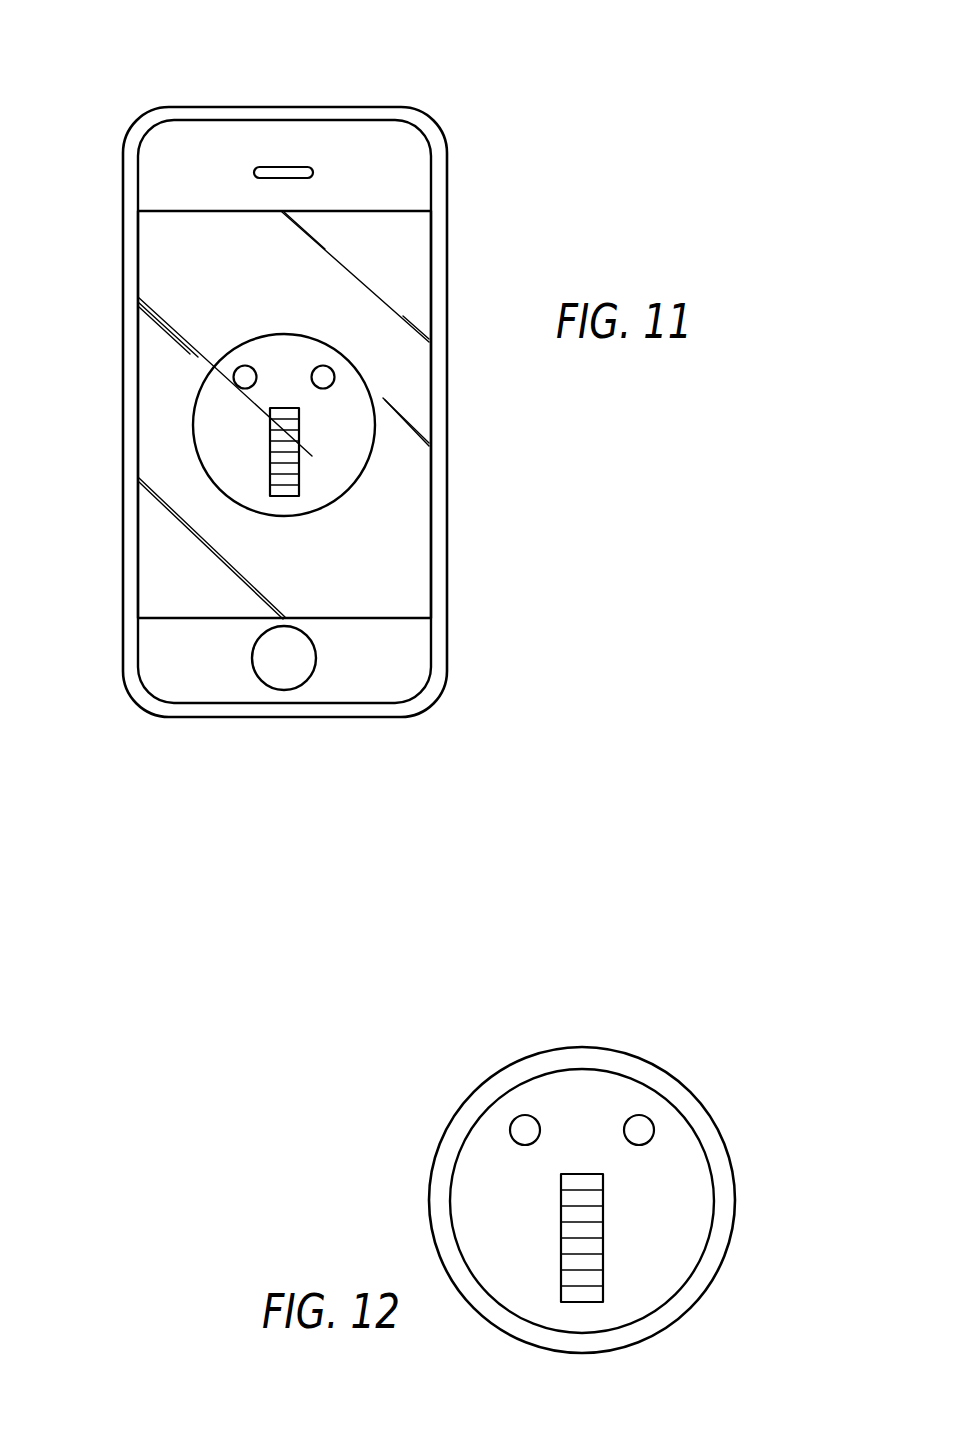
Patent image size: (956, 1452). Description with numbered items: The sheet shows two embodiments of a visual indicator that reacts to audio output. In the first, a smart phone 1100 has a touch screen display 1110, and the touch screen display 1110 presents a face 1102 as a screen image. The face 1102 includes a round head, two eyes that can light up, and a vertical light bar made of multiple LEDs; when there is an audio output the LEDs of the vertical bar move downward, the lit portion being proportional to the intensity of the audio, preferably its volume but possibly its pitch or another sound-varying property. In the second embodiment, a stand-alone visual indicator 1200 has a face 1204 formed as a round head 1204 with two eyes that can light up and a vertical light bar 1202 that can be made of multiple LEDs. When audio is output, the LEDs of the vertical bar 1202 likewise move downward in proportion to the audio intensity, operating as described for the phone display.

In FIG. 11, the smart phone 1100 is at (252, 80).
In FIG. 11, the touch screen display 1110 is at (173, 262).
In FIG. 11, the face 1102 is at (346, 447).
In FIG. 12, the visual indicator 1200 is at (602, 1145).
In FIG. 12, the vertical light bar 1202 is at (584, 1248).
In FIG. 12, the face 1204 is at (517, 1167).